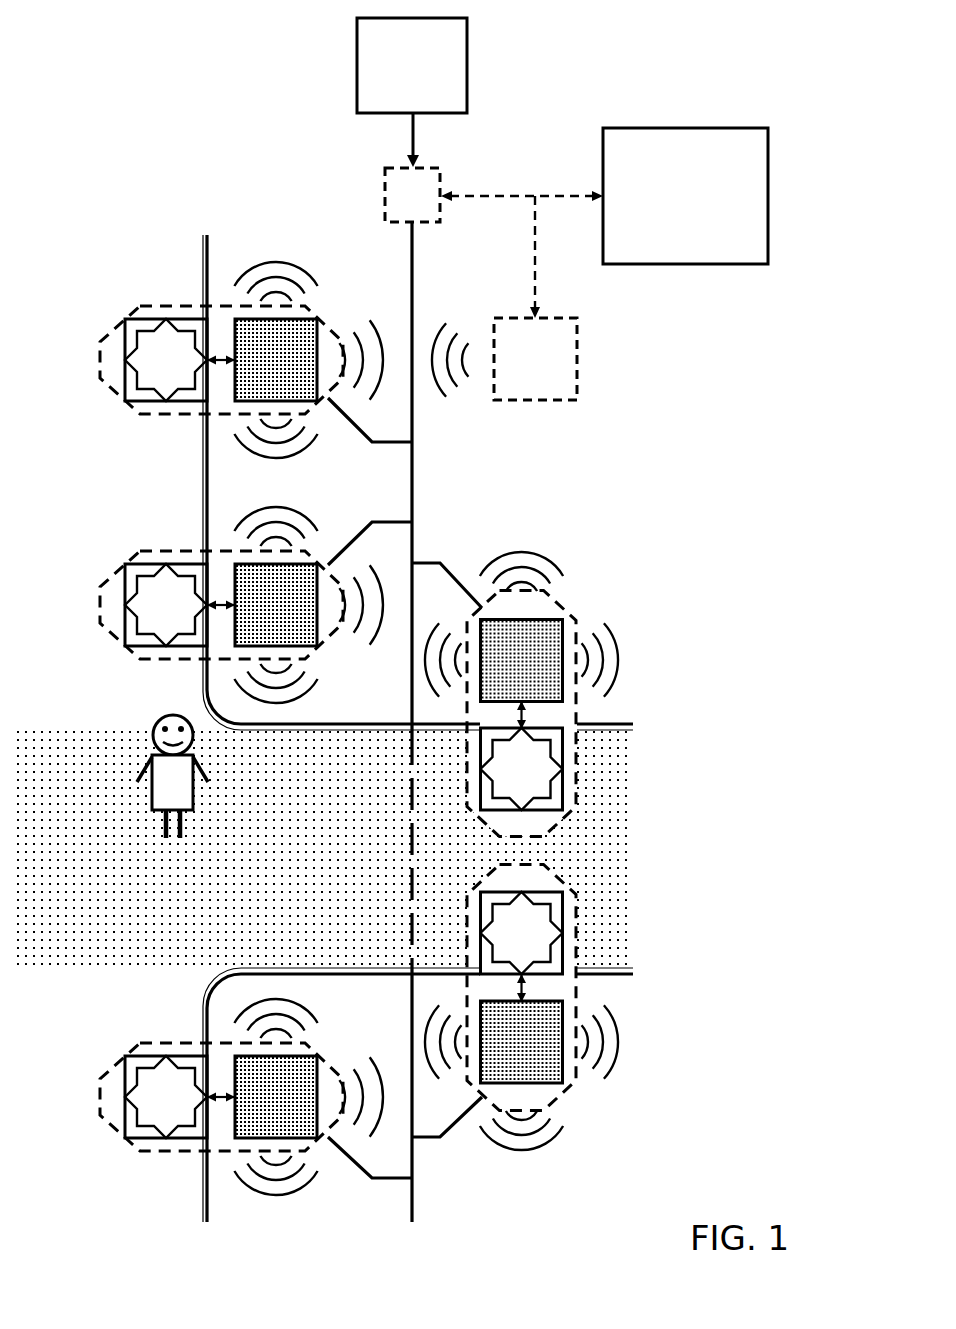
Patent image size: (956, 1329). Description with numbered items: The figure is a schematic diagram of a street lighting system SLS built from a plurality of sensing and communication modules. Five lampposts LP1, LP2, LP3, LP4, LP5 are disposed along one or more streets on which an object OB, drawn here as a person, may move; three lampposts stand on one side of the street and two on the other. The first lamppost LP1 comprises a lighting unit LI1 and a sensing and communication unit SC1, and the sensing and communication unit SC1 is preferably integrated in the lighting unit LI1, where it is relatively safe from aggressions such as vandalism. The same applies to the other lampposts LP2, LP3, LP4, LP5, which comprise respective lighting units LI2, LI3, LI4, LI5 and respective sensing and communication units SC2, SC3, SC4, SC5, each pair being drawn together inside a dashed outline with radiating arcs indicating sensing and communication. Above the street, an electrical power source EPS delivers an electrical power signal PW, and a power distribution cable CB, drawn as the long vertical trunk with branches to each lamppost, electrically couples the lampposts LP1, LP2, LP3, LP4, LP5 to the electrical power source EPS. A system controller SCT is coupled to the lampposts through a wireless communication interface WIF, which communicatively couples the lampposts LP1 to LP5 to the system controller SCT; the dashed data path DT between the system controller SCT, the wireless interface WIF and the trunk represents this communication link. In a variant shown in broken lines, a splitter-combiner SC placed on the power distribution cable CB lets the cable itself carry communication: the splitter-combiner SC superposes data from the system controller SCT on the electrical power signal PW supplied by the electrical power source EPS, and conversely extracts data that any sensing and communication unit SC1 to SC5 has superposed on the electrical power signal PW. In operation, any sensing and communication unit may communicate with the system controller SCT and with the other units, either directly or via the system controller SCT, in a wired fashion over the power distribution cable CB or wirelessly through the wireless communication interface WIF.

The street lighting system SLS is at (105, 31).
The electrical power source EPS is at (357, 68).
The electrical power signal PW is at (391, 140).
The splitter-combiner SC is at (388, 192).
The system controller SCT is at (684, 135).
The data connection DT is at (522, 241).
The wireless communication interface WIF is at (563, 366).
The power distribution cable CB is at (415, 470).
The lamppost LP1 is at (215, 351).
The lamppost LP2 is at (217, 599).
The lamppost LP3 is at (550, 694).
The lamppost LP4 is at (550, 1005).
The lamppost LP5 is at (215, 1088).
The lighting unit LI1 is at (163, 335).
The lighting unit LI2 is at (163, 580).
The lighting unit LI3 is at (560, 750).
The lighting unit LI4 is at (562, 955).
The lighting unit LI5 is at (163, 1070).
The sensing and communication unit SC1 is at (312, 332).
The sensing and communication unit SC2 is at (308, 632).
The sensing and communication unit SC3 is at (560, 628).
The sensing and communication unit SC4 is at (565, 1072).
The sensing and communication unit SC5 is at (312, 1070).
The object OB is at (160, 796).